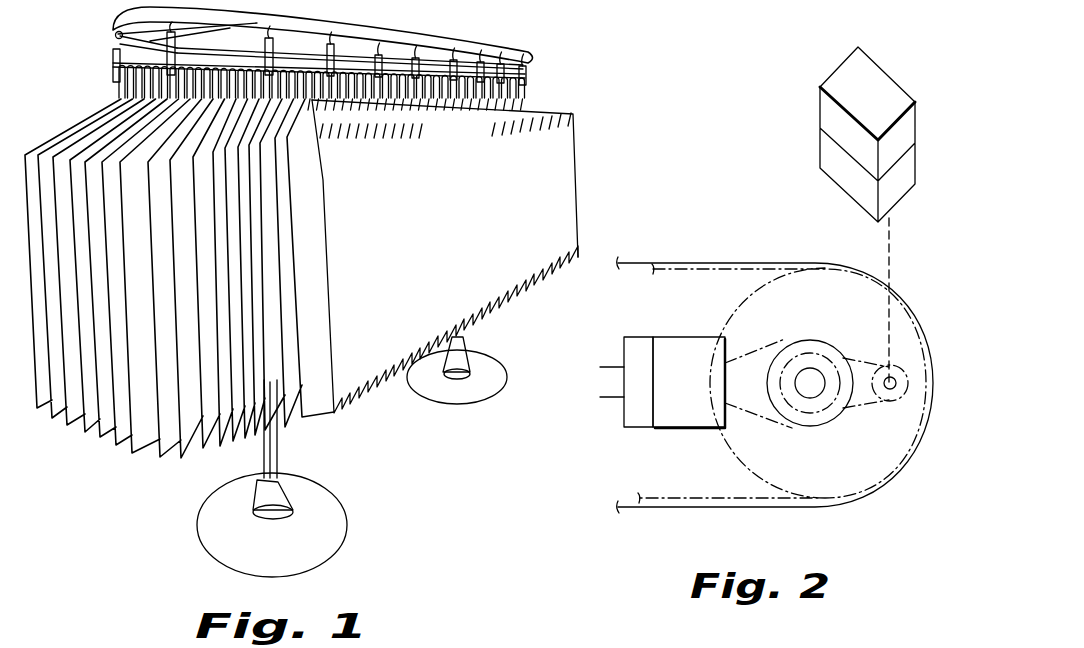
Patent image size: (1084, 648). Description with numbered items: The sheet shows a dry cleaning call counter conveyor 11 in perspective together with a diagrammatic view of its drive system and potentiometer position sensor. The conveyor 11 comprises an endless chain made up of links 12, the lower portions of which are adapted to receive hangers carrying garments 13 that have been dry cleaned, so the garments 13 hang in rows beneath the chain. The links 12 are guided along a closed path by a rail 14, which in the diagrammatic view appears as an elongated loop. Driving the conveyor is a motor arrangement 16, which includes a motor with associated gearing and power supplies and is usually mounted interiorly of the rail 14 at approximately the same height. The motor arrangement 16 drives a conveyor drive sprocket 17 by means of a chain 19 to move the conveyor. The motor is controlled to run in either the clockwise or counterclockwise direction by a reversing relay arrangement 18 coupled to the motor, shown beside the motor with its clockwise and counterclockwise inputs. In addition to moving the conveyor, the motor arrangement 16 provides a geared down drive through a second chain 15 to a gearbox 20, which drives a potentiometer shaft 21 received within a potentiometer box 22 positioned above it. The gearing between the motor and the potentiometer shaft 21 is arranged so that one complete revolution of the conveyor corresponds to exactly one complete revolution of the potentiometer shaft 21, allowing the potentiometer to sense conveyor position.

In FIG. 1, the call counter conveyor 11 is at (542, 61).
In FIG. 1, the links 12 is at (360, 43).
In FIG. 1, the garments 13 is at (552, 110).
In FIG. 1, the rail 14 is at (448, 45).
In FIG. 2, the rail 14 is at (697, 508).
In FIG. 2, the chain 15 is at (872, 410).
In FIG. 2, the motor arrangement 16 is at (681, 428).
In FIG. 2, the conveyor drive sprocket 17 is at (844, 475).
In FIG. 2, the reversing relay arrangement 18 is at (633, 428).
In FIG. 2, the chain 19 is at (756, 413).
In FIG. 2, the gearbox 20 is at (867, 192).
In FIG. 2, the potentiometer shaft 21 is at (889, 278).
In FIG. 2, the potentiometer box 22 is at (878, 75).